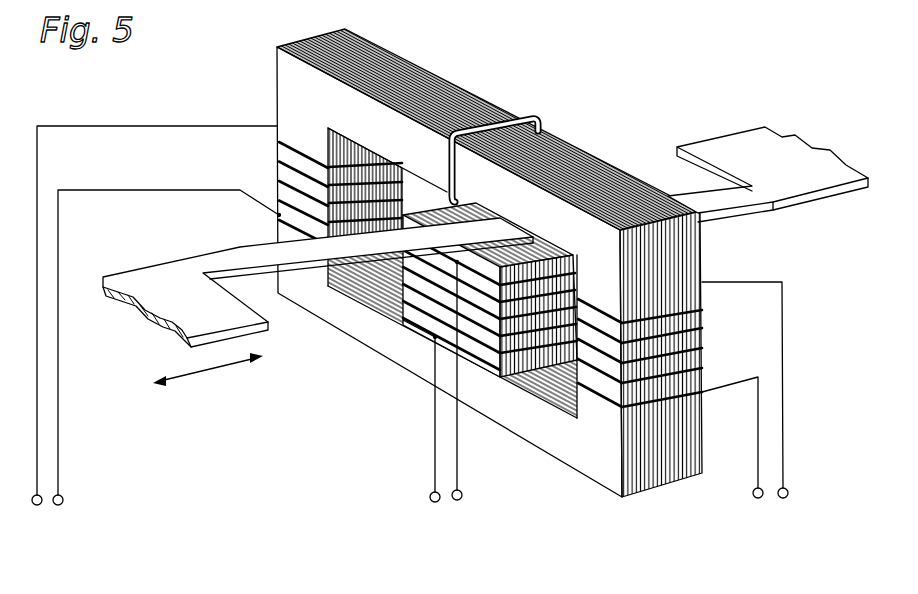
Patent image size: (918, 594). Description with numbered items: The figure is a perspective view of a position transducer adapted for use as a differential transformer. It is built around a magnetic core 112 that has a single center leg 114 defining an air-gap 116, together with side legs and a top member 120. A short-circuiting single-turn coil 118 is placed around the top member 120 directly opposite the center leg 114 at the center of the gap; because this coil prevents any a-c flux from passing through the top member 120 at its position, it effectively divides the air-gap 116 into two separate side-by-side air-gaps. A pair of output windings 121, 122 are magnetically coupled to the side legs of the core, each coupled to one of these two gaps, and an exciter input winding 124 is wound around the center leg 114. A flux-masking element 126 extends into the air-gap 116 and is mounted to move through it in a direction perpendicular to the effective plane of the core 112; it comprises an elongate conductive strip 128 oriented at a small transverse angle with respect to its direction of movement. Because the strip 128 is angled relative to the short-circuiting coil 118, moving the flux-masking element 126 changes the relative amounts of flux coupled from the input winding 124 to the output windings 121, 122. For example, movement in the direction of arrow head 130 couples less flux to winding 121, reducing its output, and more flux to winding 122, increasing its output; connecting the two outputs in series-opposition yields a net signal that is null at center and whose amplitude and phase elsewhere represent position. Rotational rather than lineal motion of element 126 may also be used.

The core 112 is at (489, 263).
The center leg 114 is at (498, 370).
The air-gap 116 is at (440, 193).
The short-circuiting single-turn coil 118 is at (535, 119).
The top member 120 is at (447, 82).
The output winding 121 is at (278, 150).
The output winding 122 is at (672, 357).
The exciter input winding 124 is at (418, 314).
The flux-masking element 126 is at (828, 92).
The elongate conductive strip 128 is at (485, 207).
The arrow head 130 is at (264, 354).